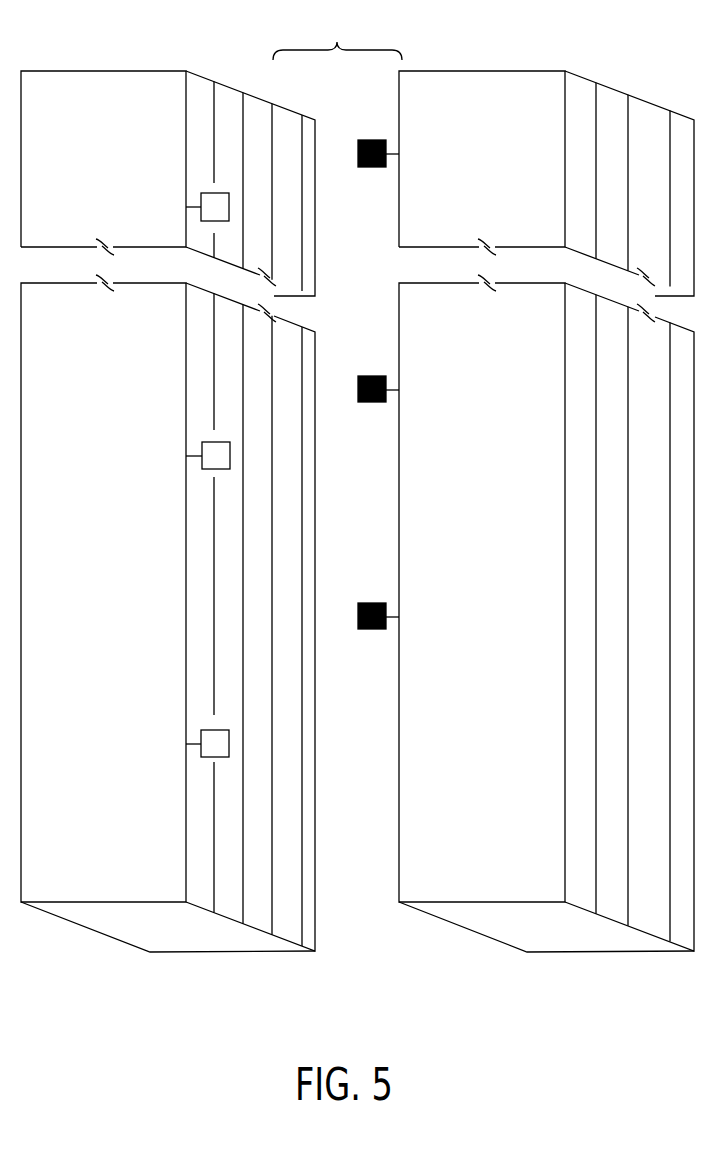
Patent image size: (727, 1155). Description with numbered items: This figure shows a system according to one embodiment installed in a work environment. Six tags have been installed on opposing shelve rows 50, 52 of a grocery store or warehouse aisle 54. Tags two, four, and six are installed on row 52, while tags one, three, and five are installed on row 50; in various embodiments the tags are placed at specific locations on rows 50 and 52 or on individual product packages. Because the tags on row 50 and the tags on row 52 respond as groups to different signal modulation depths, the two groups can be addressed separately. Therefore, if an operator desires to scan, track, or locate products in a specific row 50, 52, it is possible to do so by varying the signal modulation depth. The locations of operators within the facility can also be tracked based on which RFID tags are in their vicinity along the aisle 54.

The shelve row 50 is at (503, 71).
The shelve row 52 is at (120, 71).
The aisle 54 is at (337, 35).